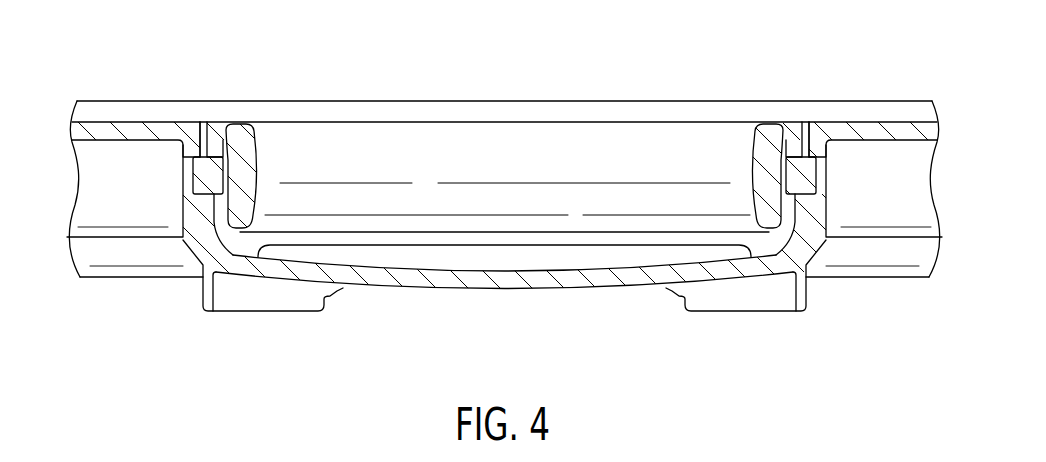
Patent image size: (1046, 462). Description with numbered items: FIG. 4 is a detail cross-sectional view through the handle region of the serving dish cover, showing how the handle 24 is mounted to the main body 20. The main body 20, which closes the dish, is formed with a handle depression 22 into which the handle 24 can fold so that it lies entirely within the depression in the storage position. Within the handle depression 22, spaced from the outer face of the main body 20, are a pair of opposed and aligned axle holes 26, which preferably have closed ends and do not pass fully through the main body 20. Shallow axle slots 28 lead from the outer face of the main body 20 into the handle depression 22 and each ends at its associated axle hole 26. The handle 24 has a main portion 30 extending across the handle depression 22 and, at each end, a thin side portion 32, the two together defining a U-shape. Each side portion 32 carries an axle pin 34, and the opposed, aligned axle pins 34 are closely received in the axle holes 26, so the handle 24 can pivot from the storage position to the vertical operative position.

The main body 20 is at (668, 101).
The handle depression 22 is at (511, 257).
The handle 24 is at (555, 148).
The axle holes 26 is at (818, 178).
The axle slots 28 is at (800, 122).
The main portion 30 is at (450, 148).
The side portions 32 is at (769, 207).
The axle pins 34 is at (799, 175).